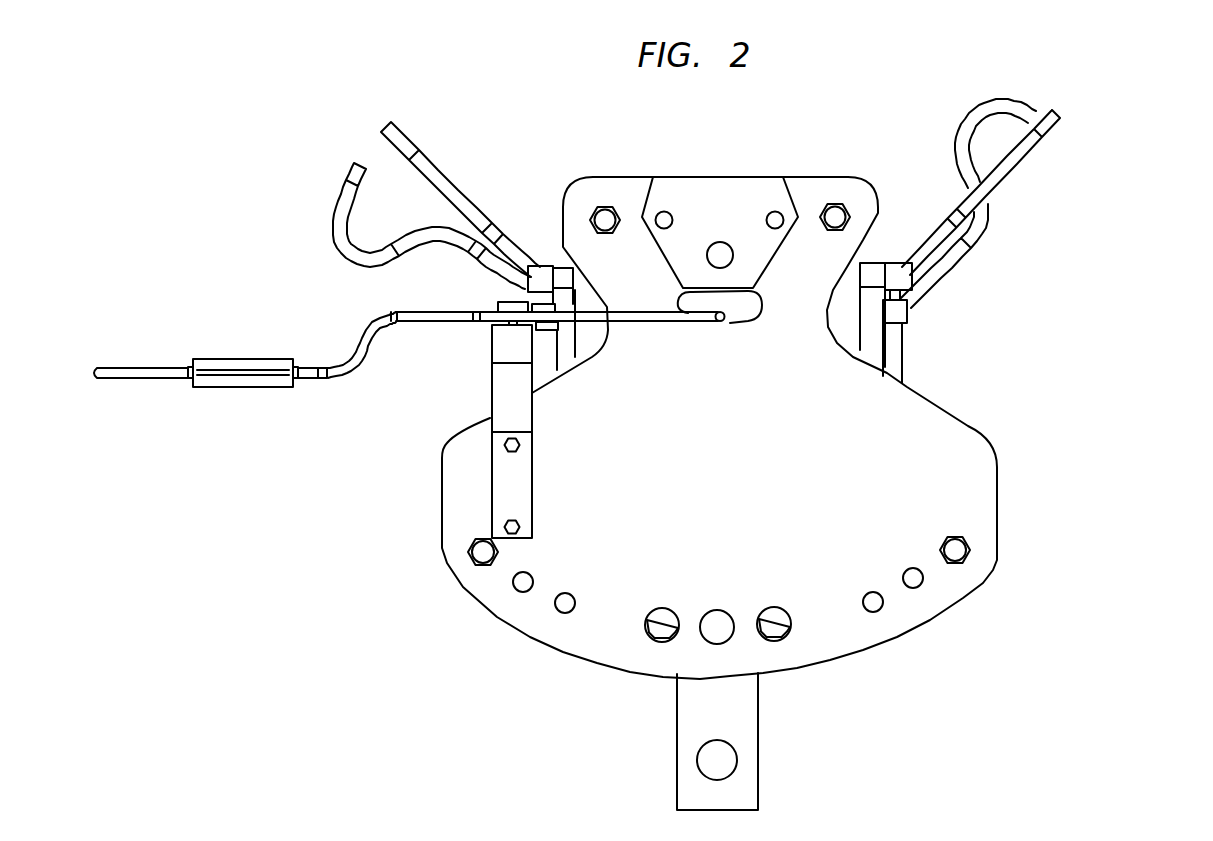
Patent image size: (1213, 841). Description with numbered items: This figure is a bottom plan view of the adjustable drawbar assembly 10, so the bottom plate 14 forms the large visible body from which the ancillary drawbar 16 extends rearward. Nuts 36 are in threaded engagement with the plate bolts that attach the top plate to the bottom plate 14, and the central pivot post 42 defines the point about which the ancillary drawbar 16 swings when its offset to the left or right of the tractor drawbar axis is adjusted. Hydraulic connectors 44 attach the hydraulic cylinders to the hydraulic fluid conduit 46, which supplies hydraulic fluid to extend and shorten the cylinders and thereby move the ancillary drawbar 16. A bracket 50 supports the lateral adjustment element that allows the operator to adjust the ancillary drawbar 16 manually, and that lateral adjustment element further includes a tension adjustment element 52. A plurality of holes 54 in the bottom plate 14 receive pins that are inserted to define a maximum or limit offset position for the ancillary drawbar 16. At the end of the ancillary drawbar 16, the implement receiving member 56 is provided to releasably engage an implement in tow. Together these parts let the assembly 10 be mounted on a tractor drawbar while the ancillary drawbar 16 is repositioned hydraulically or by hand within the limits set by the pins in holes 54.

The adjustable drawbar assembly 10 is at (1110, 663).
The bottom plate 14 is at (953, 440).
The ancillary drawbar 16 is at (687, 718).
The nuts 36 is at (476, 553).
The central pivot post 42 is at (721, 243).
The hydraulic connectors 44 is at (541, 275).
The hydraulic fluid conduit 46 is at (352, 176).
The bracket 50 is at (492, 402).
The tension adjustment element 52 is at (237, 385).
The holes 54 is at (565, 603).
The implement receiving member 56 is at (718, 760).